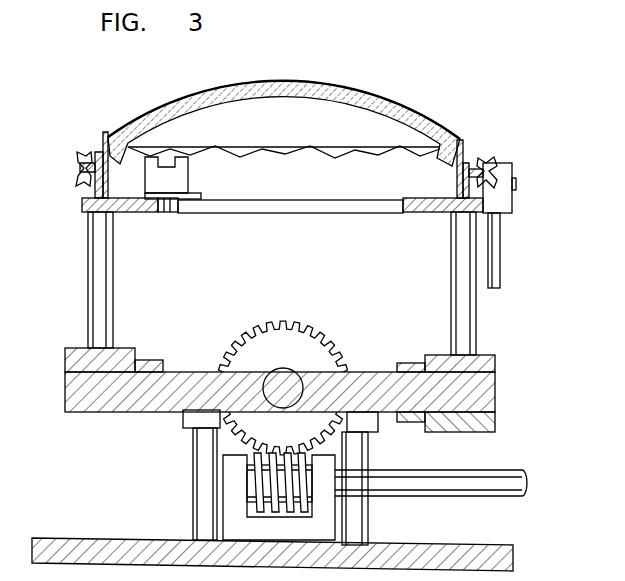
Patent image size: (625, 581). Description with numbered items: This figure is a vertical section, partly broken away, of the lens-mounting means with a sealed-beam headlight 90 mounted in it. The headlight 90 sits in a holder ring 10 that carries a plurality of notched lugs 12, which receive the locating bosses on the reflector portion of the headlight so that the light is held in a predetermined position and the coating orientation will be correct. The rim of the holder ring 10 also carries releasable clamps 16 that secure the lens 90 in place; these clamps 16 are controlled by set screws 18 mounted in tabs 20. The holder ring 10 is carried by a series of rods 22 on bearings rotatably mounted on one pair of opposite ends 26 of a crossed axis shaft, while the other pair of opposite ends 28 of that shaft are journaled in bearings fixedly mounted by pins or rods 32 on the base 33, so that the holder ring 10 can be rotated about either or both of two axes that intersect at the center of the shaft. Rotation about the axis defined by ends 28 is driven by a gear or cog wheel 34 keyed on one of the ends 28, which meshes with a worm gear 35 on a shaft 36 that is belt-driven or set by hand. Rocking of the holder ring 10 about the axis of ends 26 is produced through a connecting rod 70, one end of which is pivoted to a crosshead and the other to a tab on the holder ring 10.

The headlight 90 is at (320, 83).
The releasable clamps 16 is at (461, 150).
The tabs 20 is at (465, 153).
The set screws 18 is at (488, 165).
The lugs 12 is at (180, 172).
The holder ring 10 is at (202, 207).
The rods 22 is at (107, 274).
The connecting rod 70 is at (500, 266).
The opposite ends of crossed axis shaft 28 is at (282, 389).
The gear or cog wheel 34 is at (314, 353).
The opposite ends of crossed axis shaft 26 is at (470, 393).
The pins or rods 32 is at (203, 472).
The worm gear 35 is at (290, 503).
The shaft 36 is at (508, 482).
The base 33 is at (507, 553).